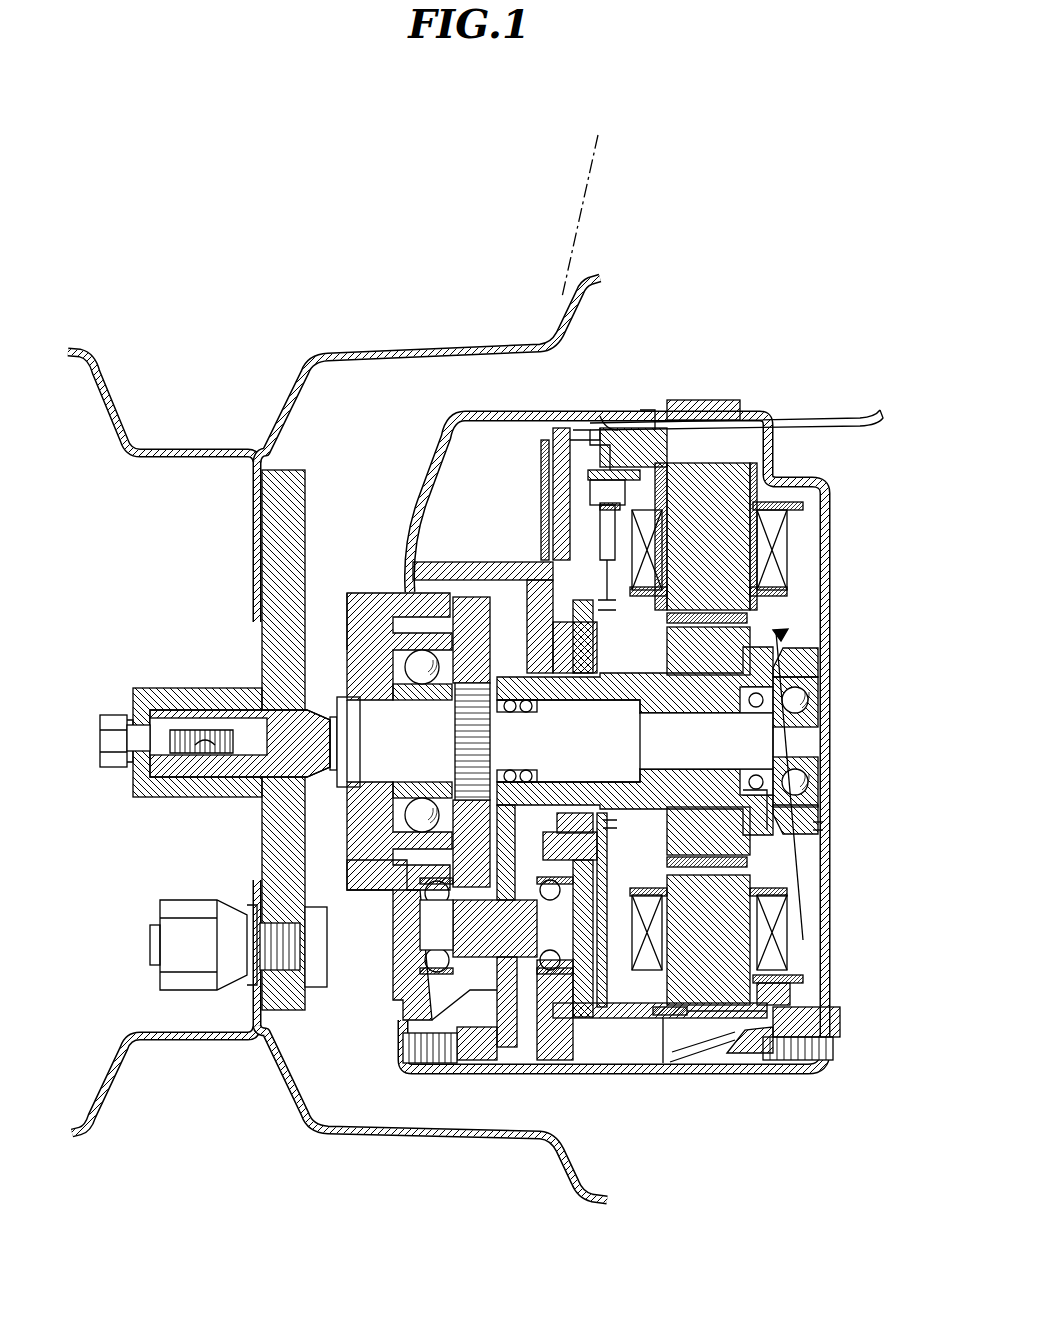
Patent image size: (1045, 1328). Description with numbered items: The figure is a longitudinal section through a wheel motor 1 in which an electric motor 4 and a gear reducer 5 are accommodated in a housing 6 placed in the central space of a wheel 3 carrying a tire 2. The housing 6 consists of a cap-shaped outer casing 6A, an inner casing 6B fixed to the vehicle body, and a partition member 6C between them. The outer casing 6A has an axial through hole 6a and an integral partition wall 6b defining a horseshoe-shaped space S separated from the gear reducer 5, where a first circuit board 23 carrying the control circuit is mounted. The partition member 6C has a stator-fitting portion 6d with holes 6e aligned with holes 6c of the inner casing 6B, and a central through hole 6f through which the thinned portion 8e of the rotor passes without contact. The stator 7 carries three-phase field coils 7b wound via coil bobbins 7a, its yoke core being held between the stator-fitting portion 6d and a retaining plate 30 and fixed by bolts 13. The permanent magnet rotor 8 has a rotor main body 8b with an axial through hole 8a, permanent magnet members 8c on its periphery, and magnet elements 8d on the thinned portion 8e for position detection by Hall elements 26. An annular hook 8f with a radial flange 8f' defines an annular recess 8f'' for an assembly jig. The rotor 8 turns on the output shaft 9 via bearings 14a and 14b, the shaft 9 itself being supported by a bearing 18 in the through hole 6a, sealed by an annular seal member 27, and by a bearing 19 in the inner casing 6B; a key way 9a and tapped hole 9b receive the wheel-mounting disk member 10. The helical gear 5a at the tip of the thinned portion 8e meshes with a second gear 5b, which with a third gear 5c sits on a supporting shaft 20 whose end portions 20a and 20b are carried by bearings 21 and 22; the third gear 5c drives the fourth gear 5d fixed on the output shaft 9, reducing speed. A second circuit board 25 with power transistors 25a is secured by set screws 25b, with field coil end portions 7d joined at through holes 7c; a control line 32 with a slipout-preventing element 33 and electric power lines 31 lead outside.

The wheel motor 1 is at (779, 340).
The tire 2 is at (600, 240).
The wheel 3 is at (166, 458).
The electric motor 4 is at (780, 630).
The gear reducer 5 is at (462, 1003).
The helical gear 5a is at (440, 640).
The second gear 5b is at (500, 1035).
The third gear 5c is at (458, 1053).
The fourth gear 5d is at (445, 605).
The housing 6 is at (740, 1080).
The outer casing 6A is at (420, 480).
The inner casing 6B is at (833, 893).
The partition member 6C is at (558, 1075).
The axial through hole 6a is at (340, 812).
The partition wall 6b is at (447, 567).
The hole 6c is at (735, 392).
The stator-fitting portion 6d is at (658, 398).
The hole 6e is at (620, 392).
The through hole 6f is at (527, 645).
The stator 7 is at (787, 545).
The coil bobbin 7a is at (785, 503).
The field coil 7b is at (787, 543).
The through hole 7c is at (540, 525).
The end portion 7d is at (790, 505).
The permanent magnet rotor 8 is at (825, 680).
The axial through hole 8a is at (835, 870).
The rotor main body 8b is at (800, 698).
The permanent magnet member 8c is at (765, 720).
The permanent magnet element 8d is at (580, 810).
The thinned portion 8e is at (620, 688).
The annular hook 8f is at (869, 845).
The annular radial flange 8f' is at (873, 813).
The annular recess 8f'' is at (731, 779).
The output shaft 9 is at (815, 762).
The key way 9a is at (203, 700).
The tapped hole 9b is at (188, 772).
The wheel-mounting disk member 10 is at (255, 625).
The bolt 13 is at (800, 1030).
The bearing 14a is at (515, 778).
The bearing 14b is at (800, 740).
The bearing 18 is at (423, 700).
The bearing 19 is at (820, 795).
The supporting shaft 20 is at (440, 940).
The end portion 20a is at (590, 1070).
The end portion 20b is at (432, 918).
The bearing 21 is at (530, 1035).
The bearing 22 is at (445, 990).
The first circuit board 23 is at (548, 508).
The second circuit board 25 is at (735, 500).
The power transistor 25a is at (765, 977).
The set screw 25b is at (790, 672).
The Hall element 26 is at (420, 890).
The annular seal member 27 is at (365, 702).
The retaining plate 30 is at (787, 1005).
The electric power line 31 is at (545, 505).
The control line 32 is at (580, 412).
The slipout-preventing element 33 is at (695, 395).
The space S is at (450, 430).